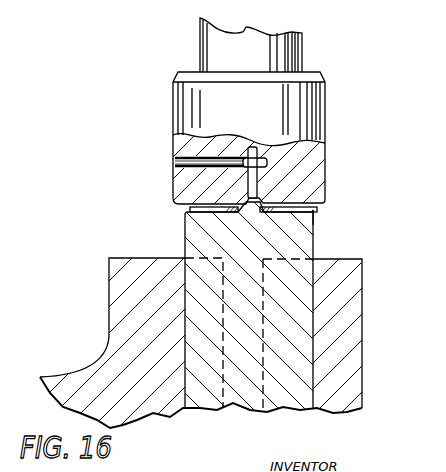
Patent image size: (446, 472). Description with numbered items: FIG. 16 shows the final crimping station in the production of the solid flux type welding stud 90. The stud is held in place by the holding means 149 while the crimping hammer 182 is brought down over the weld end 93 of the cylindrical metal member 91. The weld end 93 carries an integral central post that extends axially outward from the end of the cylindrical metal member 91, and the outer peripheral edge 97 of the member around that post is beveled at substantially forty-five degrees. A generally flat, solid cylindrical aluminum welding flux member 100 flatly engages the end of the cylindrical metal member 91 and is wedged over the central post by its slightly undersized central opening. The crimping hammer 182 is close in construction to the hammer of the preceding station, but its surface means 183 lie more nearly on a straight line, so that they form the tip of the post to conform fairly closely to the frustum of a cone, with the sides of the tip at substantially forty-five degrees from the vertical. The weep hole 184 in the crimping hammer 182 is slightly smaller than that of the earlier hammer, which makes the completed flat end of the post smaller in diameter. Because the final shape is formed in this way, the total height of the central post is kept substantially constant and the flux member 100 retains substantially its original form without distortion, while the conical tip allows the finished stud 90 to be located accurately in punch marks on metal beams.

The welding stud 90 is at (103, 230).
The cylindrical metal member 91 is at (202, 412).
The weld end 93 is at (298, 204).
The outer peripheral edge 97 is at (315, 212).
The welding flux member 100 is at (203, 212).
The holding means 149 is at (127, 307).
The crimping hammer 182 is at (173, 102).
The surface means 183 is at (270, 192).
The weep hole 184 is at (173, 178).